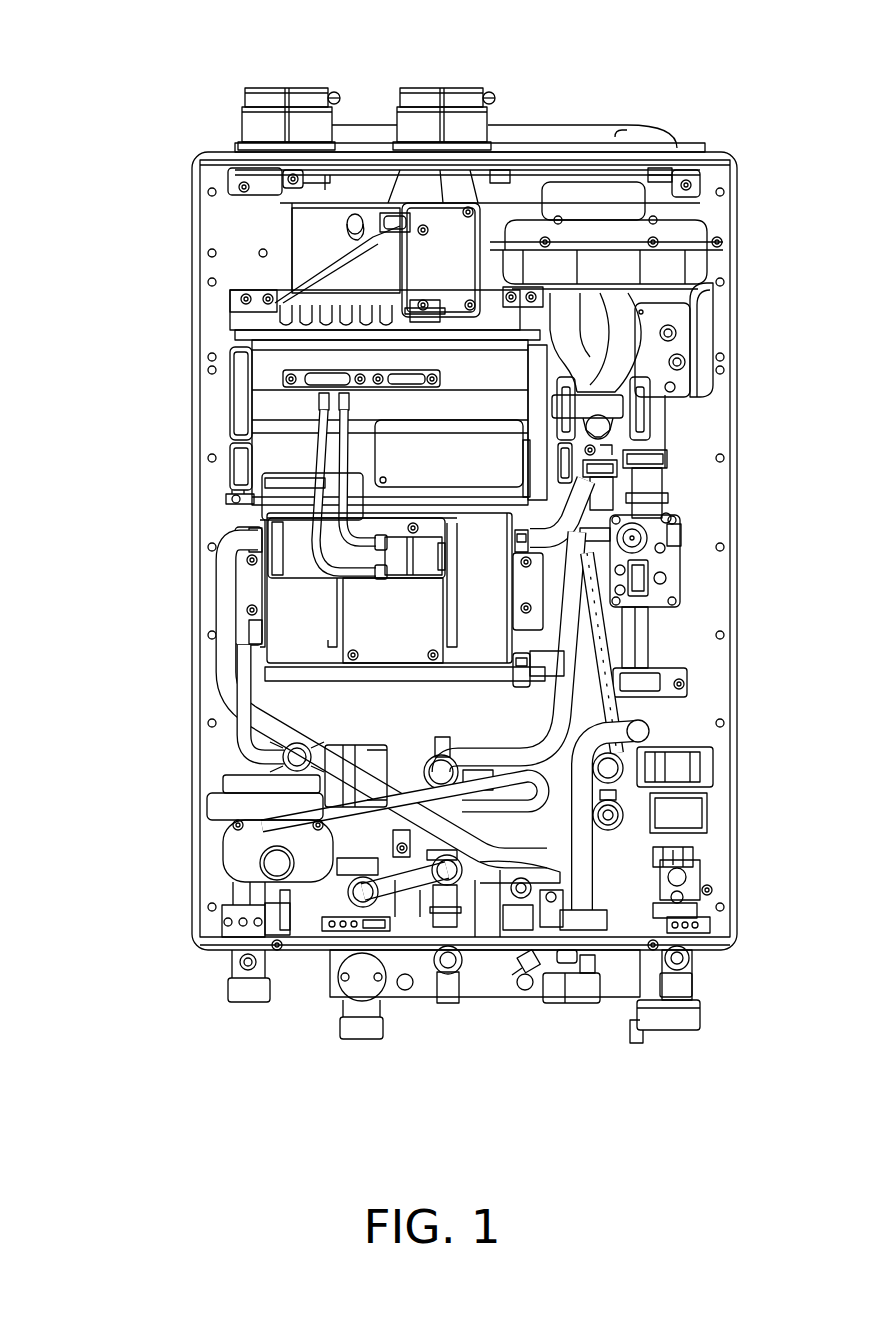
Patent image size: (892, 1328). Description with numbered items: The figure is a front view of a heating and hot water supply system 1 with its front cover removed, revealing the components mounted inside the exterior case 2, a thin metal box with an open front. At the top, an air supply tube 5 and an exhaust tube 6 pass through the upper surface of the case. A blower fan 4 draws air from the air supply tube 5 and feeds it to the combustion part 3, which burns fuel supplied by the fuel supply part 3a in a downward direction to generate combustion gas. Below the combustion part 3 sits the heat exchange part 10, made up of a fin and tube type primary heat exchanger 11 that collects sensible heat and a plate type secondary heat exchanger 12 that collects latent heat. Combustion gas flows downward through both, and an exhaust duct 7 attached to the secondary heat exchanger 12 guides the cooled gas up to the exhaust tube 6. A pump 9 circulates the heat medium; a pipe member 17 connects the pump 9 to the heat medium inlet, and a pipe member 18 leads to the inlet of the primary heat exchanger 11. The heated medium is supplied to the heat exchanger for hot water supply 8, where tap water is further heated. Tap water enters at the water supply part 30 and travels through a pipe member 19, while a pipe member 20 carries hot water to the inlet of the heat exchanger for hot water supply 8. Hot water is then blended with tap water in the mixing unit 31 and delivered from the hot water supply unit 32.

The heating and hot water supply system 1 is at (188, 84).
The exterior case 2 is at (192, 197).
The combustion part 3 is at (218, 418).
The fuel supply part 3a is at (692, 518).
The blower fan 4 is at (693, 227).
The air supply tube 5 is at (318, 88).
The exhaust tube 6 is at (467, 88).
The exhaust duct 7 is at (290, 240).
The heat exchanger for hot water supply 8 is at (630, 820).
The pump 9 is at (225, 772).
The heat exchange part 10 is at (224, 507).
The primary heat exchanger 11 is at (238, 470).
The secondary heat exchanger 12 is at (262, 546).
The pipe member 17 is at (217, 692).
The pipe member 18 is at (645, 588).
The pipe member 19 is at (215, 605).
The pipe member 20 is at (625, 603).
The water supply part 30 is at (677, 995).
The mixing unit 31 is at (500, 912).
The hot water supply unit 32 is at (553, 995).